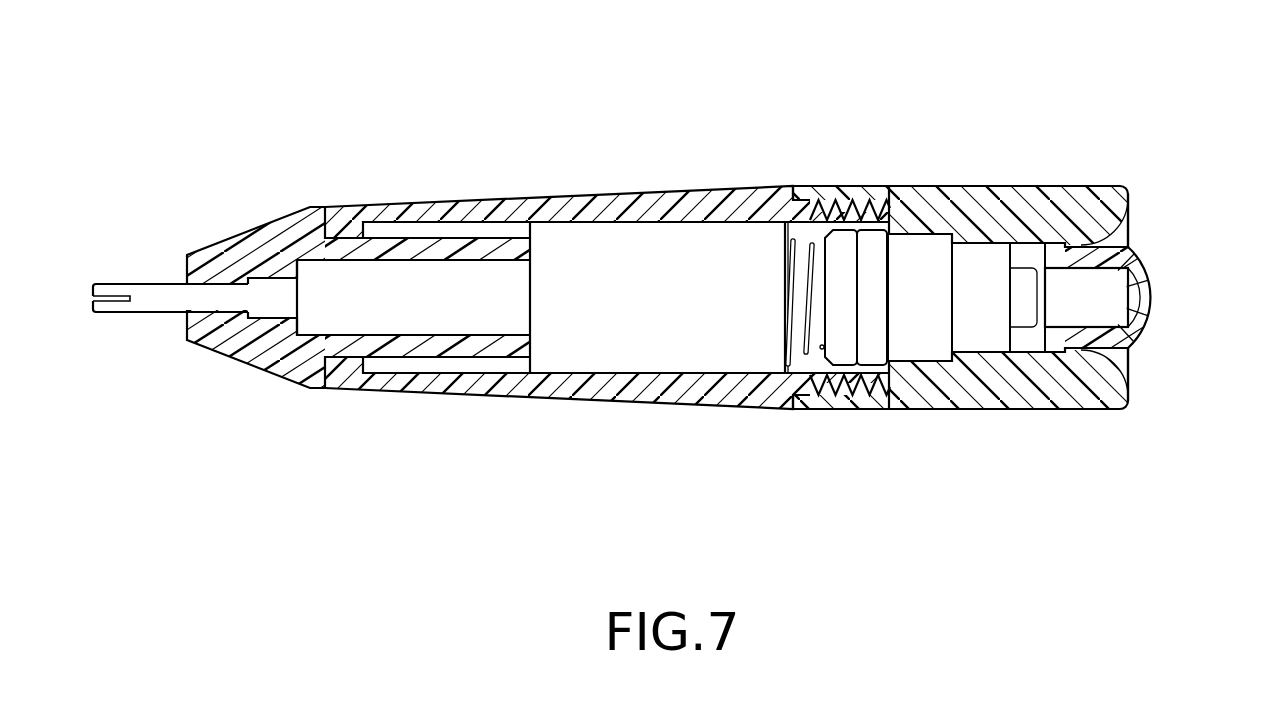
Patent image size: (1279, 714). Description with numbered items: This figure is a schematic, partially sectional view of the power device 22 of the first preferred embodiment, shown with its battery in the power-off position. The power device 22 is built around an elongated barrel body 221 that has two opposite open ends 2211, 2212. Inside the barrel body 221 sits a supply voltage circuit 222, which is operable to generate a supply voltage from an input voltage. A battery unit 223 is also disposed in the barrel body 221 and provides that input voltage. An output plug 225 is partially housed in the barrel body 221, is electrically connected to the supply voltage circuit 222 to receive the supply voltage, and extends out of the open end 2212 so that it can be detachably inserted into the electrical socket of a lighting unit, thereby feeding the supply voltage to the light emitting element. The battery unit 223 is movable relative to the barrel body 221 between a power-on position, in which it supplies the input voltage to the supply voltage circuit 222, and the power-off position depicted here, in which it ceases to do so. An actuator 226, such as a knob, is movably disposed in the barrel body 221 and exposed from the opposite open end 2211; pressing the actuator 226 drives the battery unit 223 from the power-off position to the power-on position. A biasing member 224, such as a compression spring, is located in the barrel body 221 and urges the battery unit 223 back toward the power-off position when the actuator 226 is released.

The power device 22 is at (690, 112).
The barrel body 221 is at (577, 195).
The open end 2211 is at (1132, 373).
The open end 2212 is at (187, 315).
The supply voltage circuit 222 is at (772, 305).
The battery unit 223 is at (877, 227).
The biasing member 224 is at (793, 238).
The output plug 225 is at (143, 313).
The actuator 226 is at (1150, 298).